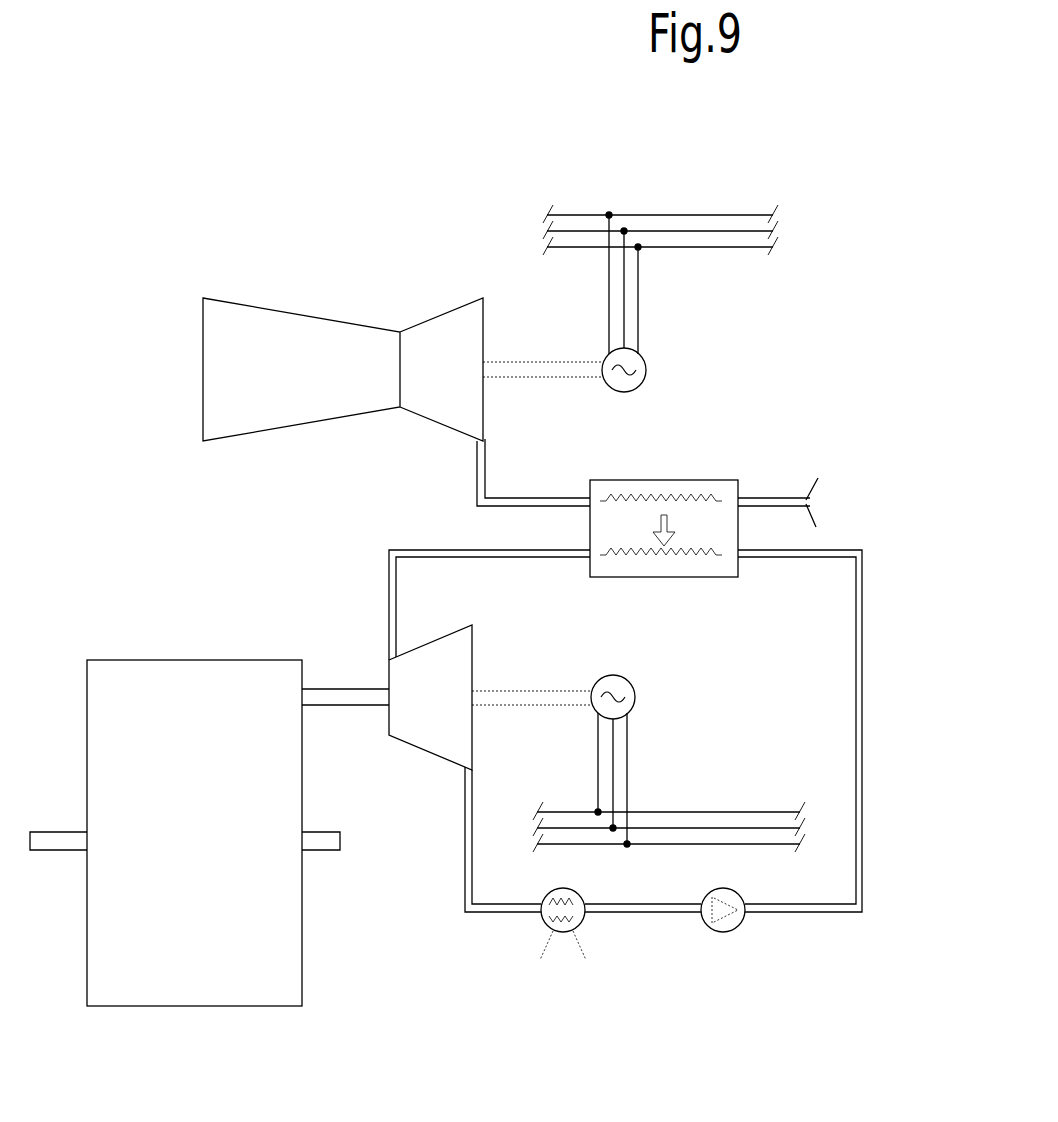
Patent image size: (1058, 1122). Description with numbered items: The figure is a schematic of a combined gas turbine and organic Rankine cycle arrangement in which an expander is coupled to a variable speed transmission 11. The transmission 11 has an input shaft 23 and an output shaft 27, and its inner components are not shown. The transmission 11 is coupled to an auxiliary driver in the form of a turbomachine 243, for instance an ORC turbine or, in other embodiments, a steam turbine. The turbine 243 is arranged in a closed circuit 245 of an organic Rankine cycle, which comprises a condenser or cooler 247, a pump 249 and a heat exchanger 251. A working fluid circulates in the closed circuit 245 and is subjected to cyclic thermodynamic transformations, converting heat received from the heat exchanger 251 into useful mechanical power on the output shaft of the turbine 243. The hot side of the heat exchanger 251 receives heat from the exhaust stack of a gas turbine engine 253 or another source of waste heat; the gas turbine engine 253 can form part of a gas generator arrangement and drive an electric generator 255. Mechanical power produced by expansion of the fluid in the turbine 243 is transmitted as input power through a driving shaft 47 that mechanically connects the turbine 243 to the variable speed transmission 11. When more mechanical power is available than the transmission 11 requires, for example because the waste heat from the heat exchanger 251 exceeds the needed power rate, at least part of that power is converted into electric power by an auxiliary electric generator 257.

The variable speed transmission 11 is at (160, 652).
The input shaft 23 is at (75, 830).
The output shaft 27 is at (314, 830).
The driving shaft 47 is at (338, 687).
The turbomachine 243 is at (472, 640).
The closed circuit 245 is at (866, 538).
The condenser or cooler 247 is at (585, 917).
The pump 249 is at (745, 917).
The heat exchanger 251 is at (671, 481).
The gas turbine engine 253 is at (400, 307).
The electric generator 255 is at (646, 378).
The auxiliary electric generator 257 is at (632, 679).